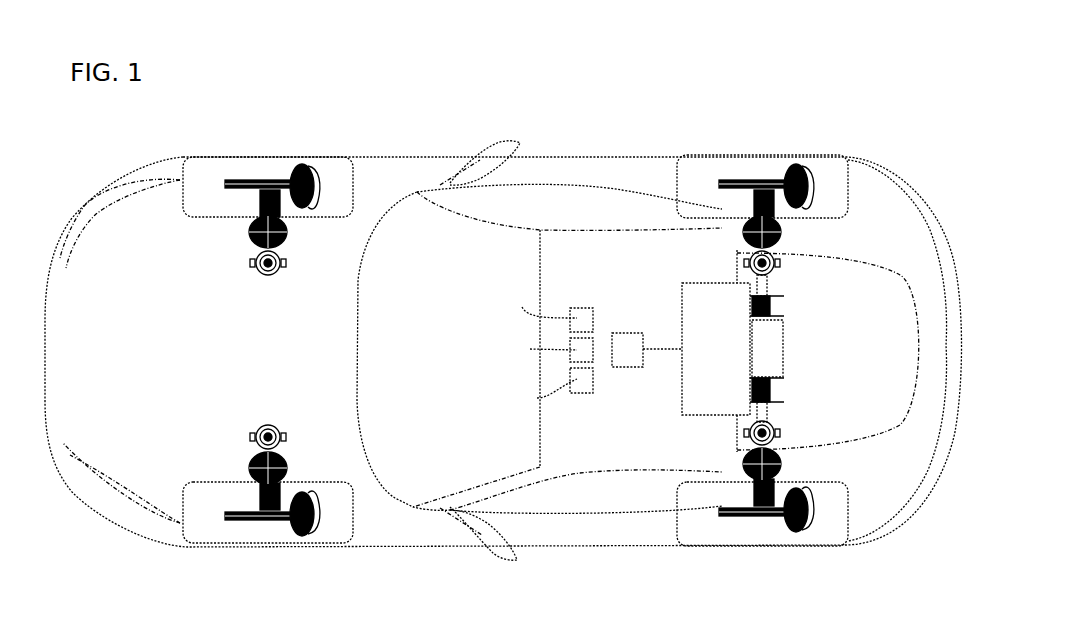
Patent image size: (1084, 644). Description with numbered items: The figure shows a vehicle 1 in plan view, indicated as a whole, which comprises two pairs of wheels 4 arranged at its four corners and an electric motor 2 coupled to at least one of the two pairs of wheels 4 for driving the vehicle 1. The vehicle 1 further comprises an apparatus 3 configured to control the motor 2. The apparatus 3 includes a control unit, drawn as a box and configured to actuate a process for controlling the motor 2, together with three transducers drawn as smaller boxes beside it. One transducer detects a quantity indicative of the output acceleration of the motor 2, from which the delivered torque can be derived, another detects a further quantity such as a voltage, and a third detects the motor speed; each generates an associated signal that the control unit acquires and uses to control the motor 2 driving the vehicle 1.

The vehicle 1 is at (808, 105).
The electric motor 2 is at (690, 290).
The apparatus 3 is at (626, 407).
The wheels 4 is at (190, 167).